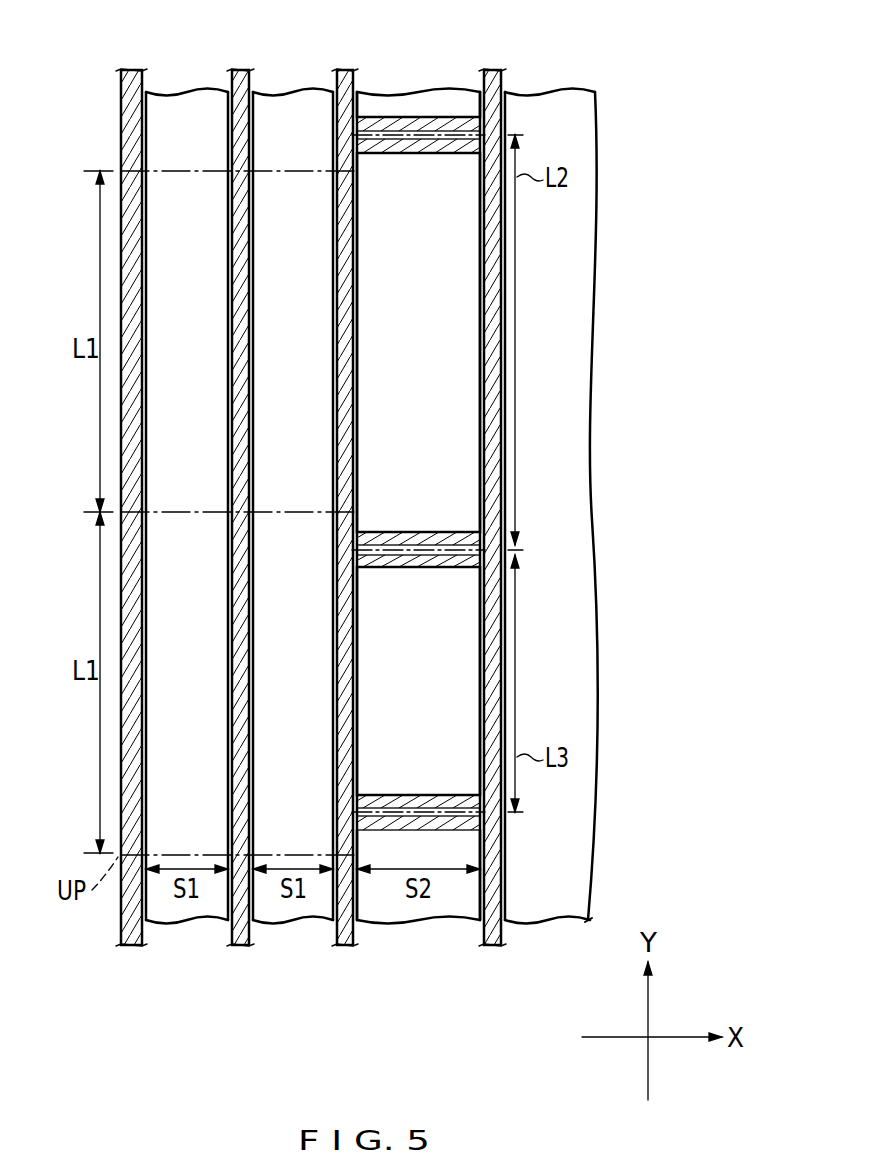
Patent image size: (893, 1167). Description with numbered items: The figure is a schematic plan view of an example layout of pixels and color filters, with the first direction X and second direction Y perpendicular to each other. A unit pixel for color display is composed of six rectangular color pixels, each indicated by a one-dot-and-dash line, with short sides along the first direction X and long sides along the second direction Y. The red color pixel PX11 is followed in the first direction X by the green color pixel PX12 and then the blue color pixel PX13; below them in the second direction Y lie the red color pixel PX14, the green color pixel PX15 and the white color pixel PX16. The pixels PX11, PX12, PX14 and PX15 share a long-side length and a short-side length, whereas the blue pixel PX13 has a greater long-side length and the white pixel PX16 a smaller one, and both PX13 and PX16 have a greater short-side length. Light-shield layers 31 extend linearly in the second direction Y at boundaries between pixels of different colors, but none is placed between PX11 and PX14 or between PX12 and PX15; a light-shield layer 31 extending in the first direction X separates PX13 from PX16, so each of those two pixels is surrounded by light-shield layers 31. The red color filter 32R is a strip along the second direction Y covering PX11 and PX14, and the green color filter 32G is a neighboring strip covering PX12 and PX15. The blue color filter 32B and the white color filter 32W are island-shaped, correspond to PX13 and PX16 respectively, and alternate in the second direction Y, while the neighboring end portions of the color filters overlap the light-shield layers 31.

The light-shield layer 31 is at (133, 69).
The first color filter 32R is at (186, 100).
The second color filter 32G is at (290, 100).
The third color filter 32B is at (395, 118).
The fourth color filter 32W is at (447, 106).
The first color pixel PX11 is at (187, 342).
The second color pixel PX12 is at (295, 342).
The third color pixel PX13 is at (418, 342).
The fourth color pixel PX14 is at (187, 686).
The fifth color pixel PX15 is at (295, 686).
The sixth color pixel PX16 is at (418, 686).